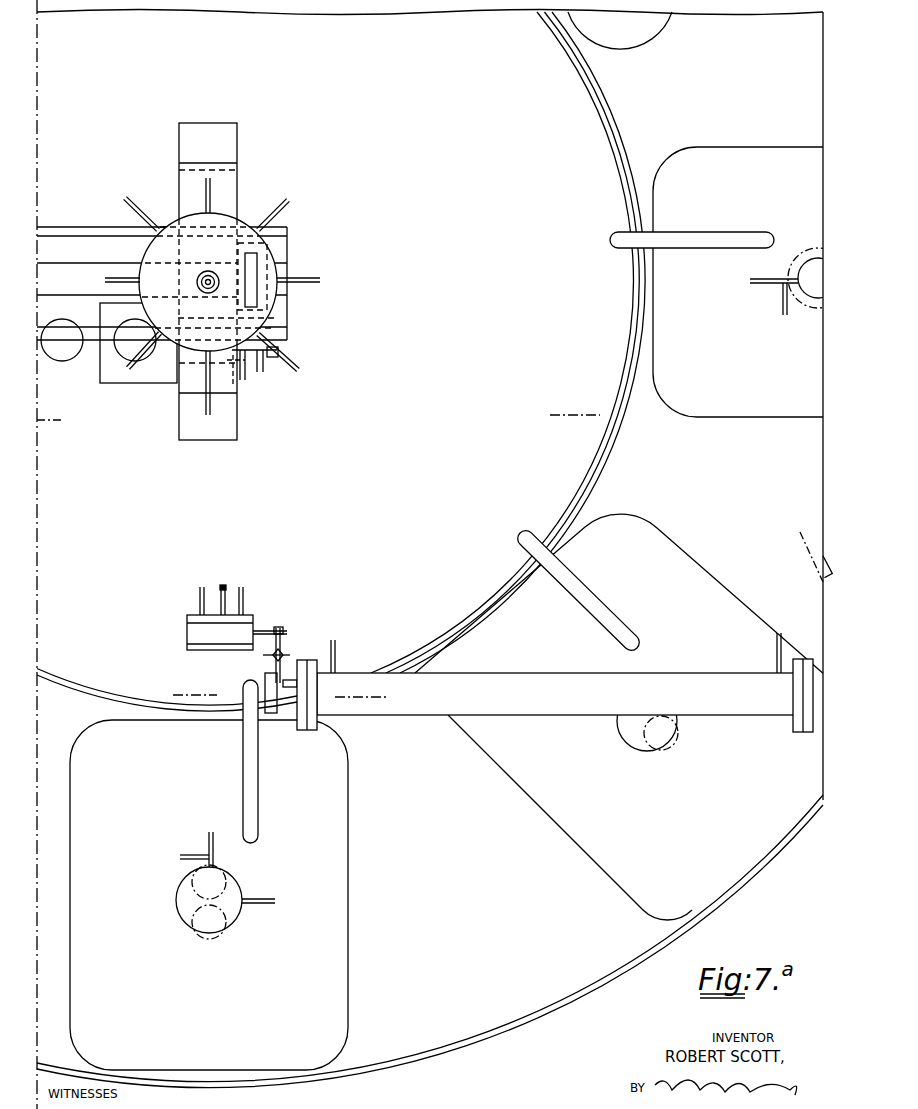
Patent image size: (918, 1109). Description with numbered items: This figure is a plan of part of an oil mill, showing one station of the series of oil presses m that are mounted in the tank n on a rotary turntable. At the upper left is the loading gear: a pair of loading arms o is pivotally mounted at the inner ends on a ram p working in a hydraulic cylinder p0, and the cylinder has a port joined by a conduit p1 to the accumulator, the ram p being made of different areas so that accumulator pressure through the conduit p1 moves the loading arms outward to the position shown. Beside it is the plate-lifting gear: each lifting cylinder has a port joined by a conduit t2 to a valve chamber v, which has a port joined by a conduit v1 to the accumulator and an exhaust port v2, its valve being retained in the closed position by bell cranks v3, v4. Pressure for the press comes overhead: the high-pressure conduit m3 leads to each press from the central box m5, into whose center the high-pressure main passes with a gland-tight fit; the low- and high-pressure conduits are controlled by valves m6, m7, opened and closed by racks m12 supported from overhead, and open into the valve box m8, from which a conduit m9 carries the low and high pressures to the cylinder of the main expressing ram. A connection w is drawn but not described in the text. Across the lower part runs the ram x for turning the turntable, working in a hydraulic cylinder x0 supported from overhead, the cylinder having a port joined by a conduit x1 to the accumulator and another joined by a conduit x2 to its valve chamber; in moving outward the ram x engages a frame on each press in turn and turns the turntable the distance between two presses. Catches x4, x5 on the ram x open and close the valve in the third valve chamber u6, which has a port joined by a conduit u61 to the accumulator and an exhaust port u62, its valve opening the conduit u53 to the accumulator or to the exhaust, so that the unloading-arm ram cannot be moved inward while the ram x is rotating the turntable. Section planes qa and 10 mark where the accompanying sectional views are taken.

The tank n is at (60, 682).
The oil press m is at (643, 33).
The high pressure conduit m3 is at (105, 280).
The central box m5 is at (162, 266).
The low pressure valve m6 is at (813, 248).
The high pressure valve m7 is at (667, 747).
The valve box m8 is at (810, 262).
The conduit m9 is at (263, 907).
The racks m12 is at (813, 555).
The loading arms o is at (42, 227).
The hydraulic cylinder p0 is at (68, 267).
The ram p is at (267, 290).
The conduit p1 is at (242, 244).
The valve chamber v is at (263, 330).
The conduit v1 is at (263, 377).
The exhaust port v2 is at (240, 380).
The bell crank v3 is at (162, 350).
The bell crank v4 is at (88, 360).
The conduit t2 is at (223, 373).
The section plane 9a—9a qa is at (318, 436).
The rod w is at (785, 313).
The third valve chamber u6 is at (188, 633).
The conduit u61 is at (198, 592).
The exhaust port u62 is at (223, 587).
The conduit u53 is at (245, 593).
The ram x is at (292, 697).
The hydraulic cylinder x0 is at (527, 705).
The conduit x1 is at (335, 648).
The conduit x2 is at (783, 643).
The catch x4 is at (270, 678).
The catch x5 is at (287, 687).
The section plane 10— 10 is at (280, 685).